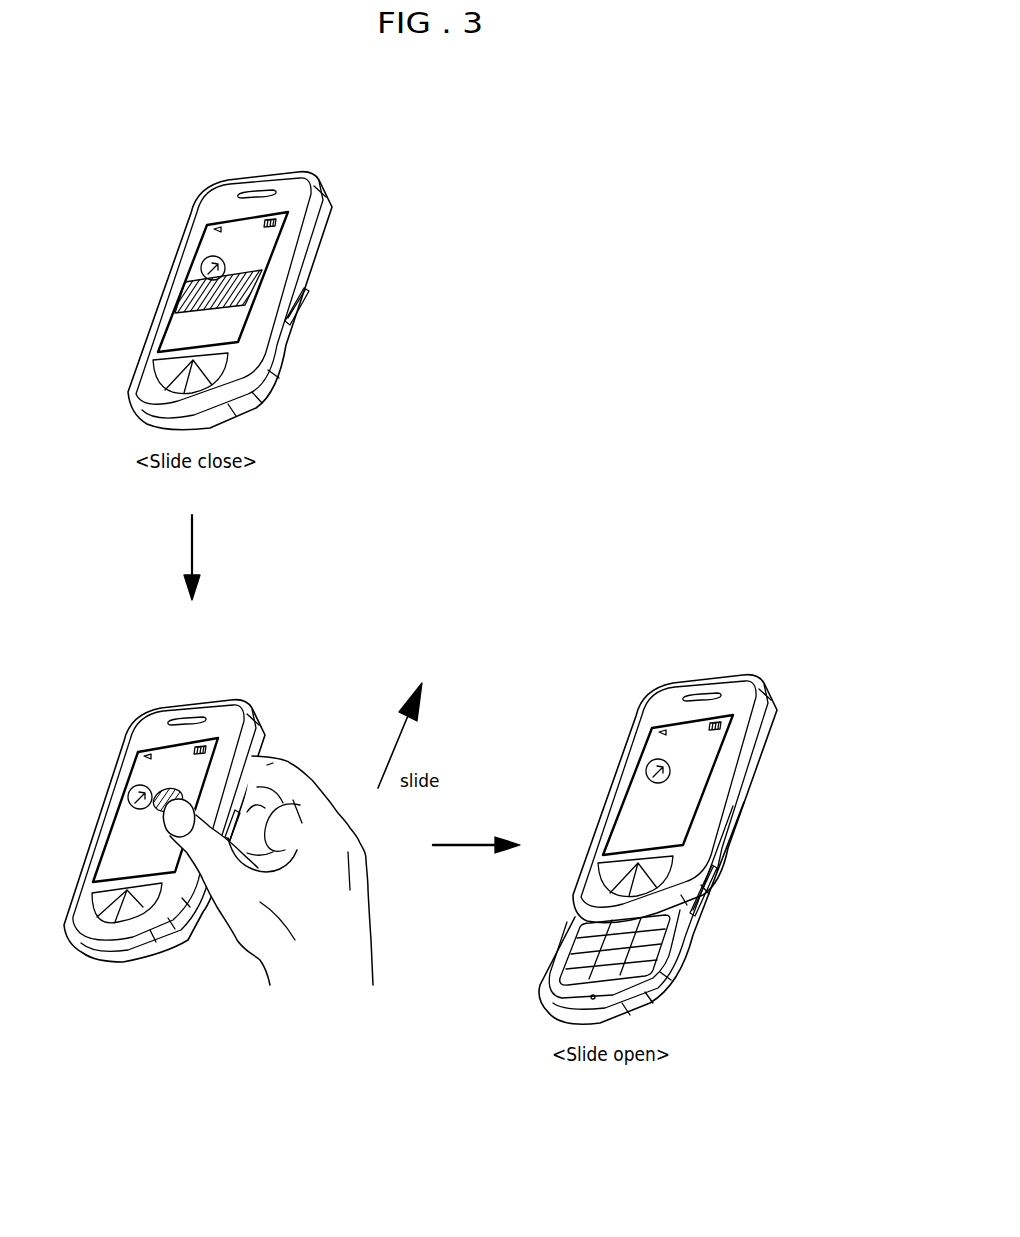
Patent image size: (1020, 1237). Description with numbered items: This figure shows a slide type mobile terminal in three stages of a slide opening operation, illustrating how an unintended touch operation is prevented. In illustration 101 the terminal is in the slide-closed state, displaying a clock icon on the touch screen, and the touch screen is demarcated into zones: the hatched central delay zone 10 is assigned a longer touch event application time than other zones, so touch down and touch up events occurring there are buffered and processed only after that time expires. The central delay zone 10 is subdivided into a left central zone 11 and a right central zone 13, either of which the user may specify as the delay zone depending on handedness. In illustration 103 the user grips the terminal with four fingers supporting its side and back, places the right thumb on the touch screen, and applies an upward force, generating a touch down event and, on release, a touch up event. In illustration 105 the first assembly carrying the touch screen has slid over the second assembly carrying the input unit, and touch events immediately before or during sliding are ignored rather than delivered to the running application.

The central delay zone 10 is at (411, 283).
The left central zone 11 is at (213, 313).
The right central zone 13 is at (263, 272).
The illustration of slide-closed state 101 is at (282, 148).
The illustration of thumb touch 103 is at (213, 676).
The illustration of slide-open state 105 is at (711, 664).